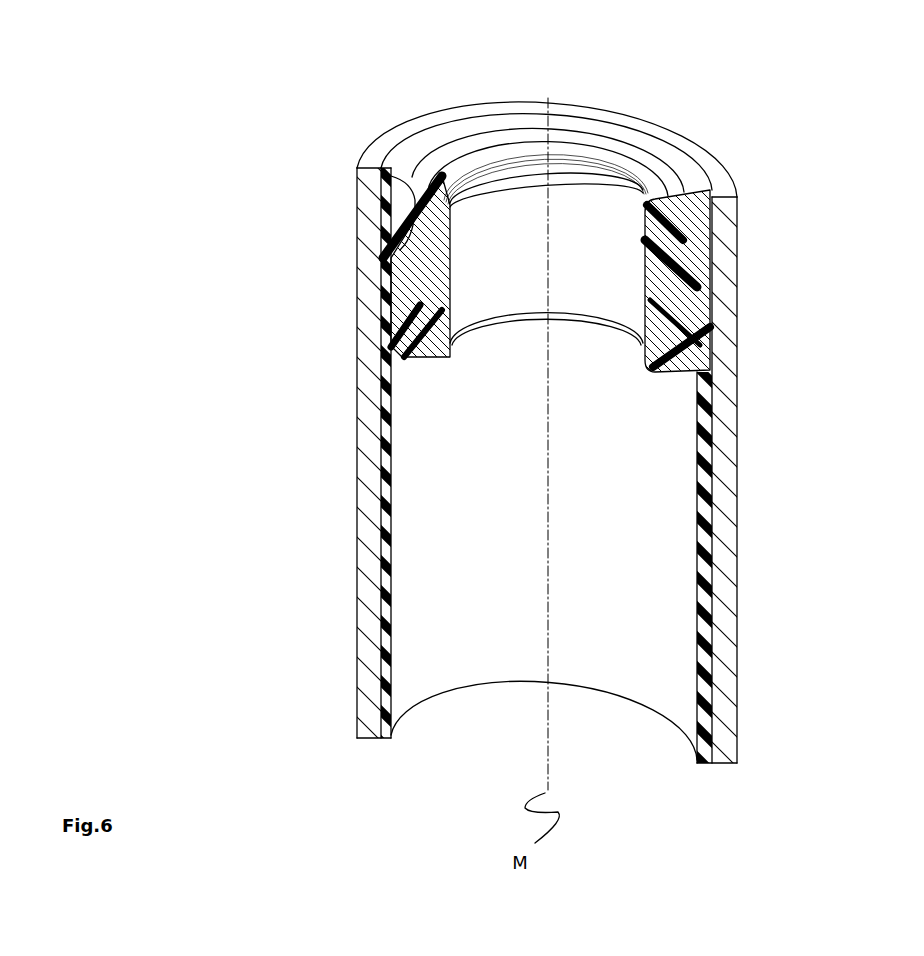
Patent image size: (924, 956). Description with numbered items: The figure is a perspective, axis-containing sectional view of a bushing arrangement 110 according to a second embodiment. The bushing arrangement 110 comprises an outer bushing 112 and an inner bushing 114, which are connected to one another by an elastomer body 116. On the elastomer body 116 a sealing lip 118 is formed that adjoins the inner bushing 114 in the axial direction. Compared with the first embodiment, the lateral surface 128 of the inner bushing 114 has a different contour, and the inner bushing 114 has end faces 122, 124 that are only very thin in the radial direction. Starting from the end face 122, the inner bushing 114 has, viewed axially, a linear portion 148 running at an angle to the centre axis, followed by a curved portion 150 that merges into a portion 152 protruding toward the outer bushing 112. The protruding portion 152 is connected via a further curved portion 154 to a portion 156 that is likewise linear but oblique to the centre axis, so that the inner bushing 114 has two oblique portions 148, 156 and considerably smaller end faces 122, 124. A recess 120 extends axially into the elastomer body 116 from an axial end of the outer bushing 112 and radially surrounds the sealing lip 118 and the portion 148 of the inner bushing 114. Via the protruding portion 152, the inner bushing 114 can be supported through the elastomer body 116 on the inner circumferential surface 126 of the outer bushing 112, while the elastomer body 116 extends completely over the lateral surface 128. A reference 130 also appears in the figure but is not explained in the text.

The bushing arrangement 110 is at (792, 112).
The outer bushing 112 is at (366, 586).
The inner bushing 114 is at (396, 319).
The elastomer body 116 is at (705, 553).
The sealing lip 118 is at (524, 150).
The recess 120 is at (441, 165).
The end face 122 is at (631, 172).
The end face 124 is at (697, 384).
The inner circumferential surface 126 is at (386, 527).
The lateral surface 128 is at (400, 279).
The lip 130 is at (396, 230).
The linear portion 148 is at (665, 240).
The curved portion 150 is at (668, 264).
The protruding portion 152 is at (672, 303).
The curved portion 154 is at (678, 334).
The linear portion 156 is at (665, 366).